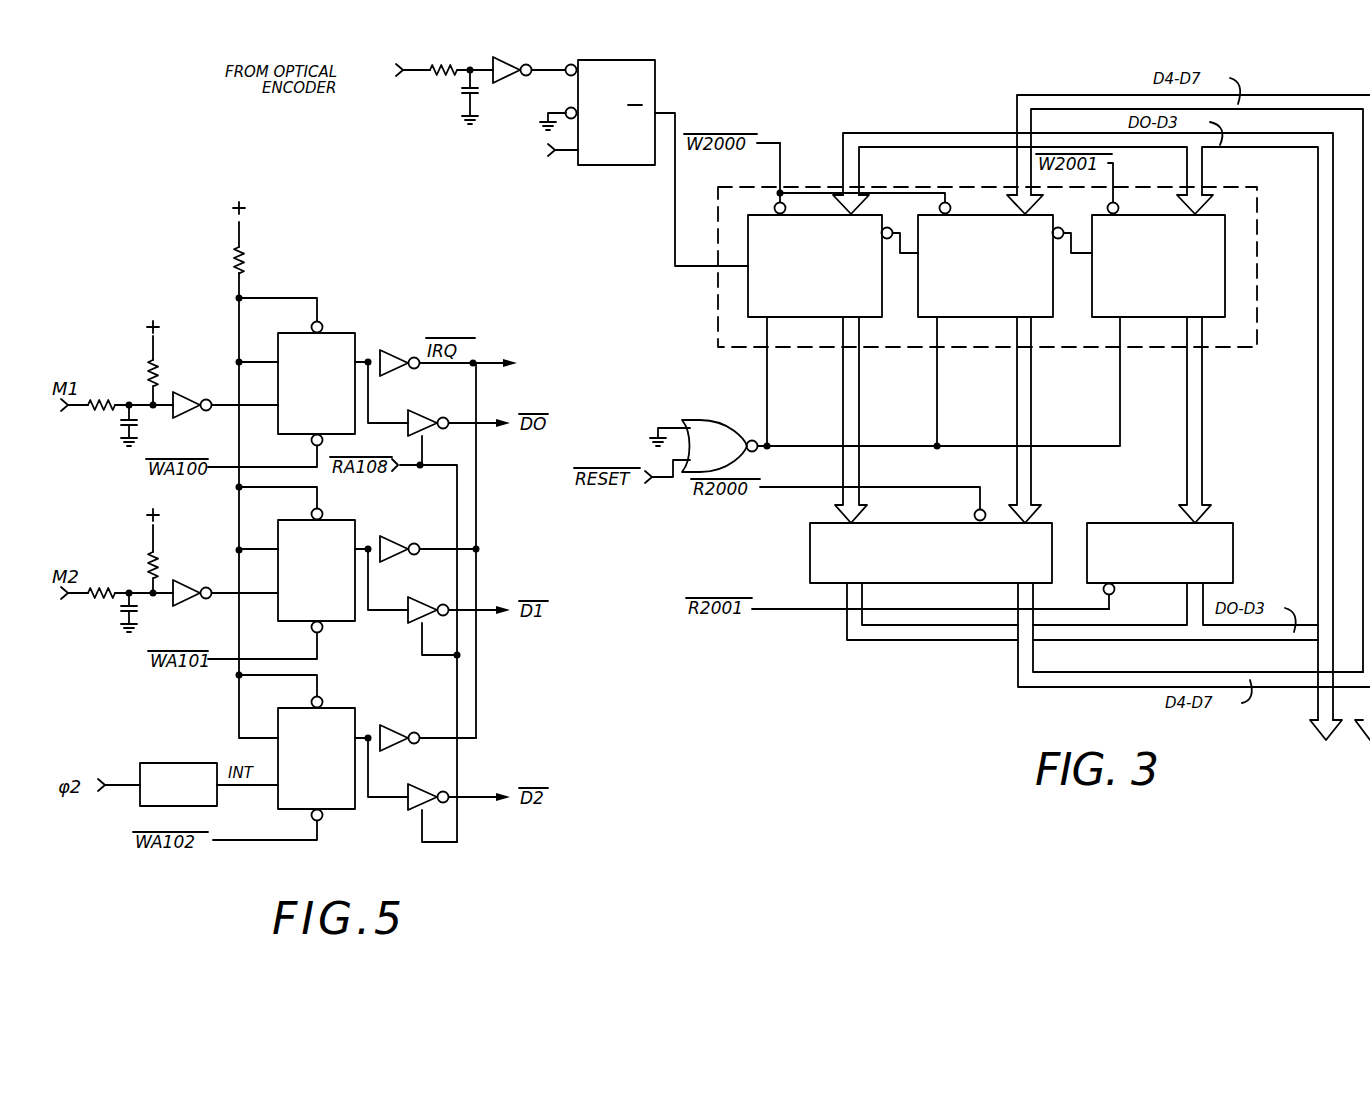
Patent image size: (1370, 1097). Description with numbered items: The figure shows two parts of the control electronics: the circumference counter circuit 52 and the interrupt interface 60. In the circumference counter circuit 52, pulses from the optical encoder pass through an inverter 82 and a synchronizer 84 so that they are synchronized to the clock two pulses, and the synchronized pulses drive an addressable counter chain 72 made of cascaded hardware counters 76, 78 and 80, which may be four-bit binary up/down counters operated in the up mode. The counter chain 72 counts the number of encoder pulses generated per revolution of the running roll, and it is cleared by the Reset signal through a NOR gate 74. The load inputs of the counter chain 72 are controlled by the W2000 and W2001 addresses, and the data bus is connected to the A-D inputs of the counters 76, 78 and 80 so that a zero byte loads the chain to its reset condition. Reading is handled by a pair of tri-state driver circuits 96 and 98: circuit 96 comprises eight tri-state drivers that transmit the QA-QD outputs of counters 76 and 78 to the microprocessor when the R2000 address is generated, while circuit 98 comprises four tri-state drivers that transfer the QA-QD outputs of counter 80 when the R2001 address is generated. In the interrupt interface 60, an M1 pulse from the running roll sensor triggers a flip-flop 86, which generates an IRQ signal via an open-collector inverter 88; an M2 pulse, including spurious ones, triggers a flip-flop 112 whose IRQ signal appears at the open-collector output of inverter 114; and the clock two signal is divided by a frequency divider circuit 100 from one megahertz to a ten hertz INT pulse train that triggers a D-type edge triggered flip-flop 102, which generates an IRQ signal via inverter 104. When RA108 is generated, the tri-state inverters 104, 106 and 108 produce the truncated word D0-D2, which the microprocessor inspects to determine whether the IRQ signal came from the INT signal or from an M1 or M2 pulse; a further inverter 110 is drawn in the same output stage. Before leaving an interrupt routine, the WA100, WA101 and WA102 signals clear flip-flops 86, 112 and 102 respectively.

In FIG. 3, the circumference counter circuit 52 is at (648, 251).
In FIG. 5, the interrupt interface 60 is at (180, 292).
In FIG. 3, the addressable counter chain 72 is at (730, 311).
In FIG. 3, the NOR gate 74 is at (705, 430).
In FIG. 3, the hardware counter 76 is at (870, 287).
In FIG. 3, the hardware counter 78 is at (1042, 287).
In FIG. 3, the hardware counter 80 is at (1215, 287).
In FIG. 3, the inverter 82 is at (514, 79).
In FIG. 3, the synchronizer 84 is at (652, 68).
In FIG. 5, the flip-flop 86 is at (341, 343).
In FIG. 5, the inverter 88 is at (410, 333).
In FIG. 3, the tri-state driver circuit 96 is at (815, 547).
In FIG. 3, the tri-state driver circuit 98 is at (1220, 541).
In FIG. 5, the frequency divider circuit 100 is at (152, 770).
In FIG. 5, the flip-flop 102 is at (341, 718).
In FIG. 5, the inverter 104 is at (390, 730).
In FIG. 5, the tri-state inverter 106 is at (440, 393).
In FIG. 5, the tri-state inverter 108 is at (428, 583).
In FIG. 5, the inverter 110 is at (428, 770).
In FIG. 5, the flip-flop 112 is at (341, 530).
In FIG. 5, the inverter 114 is at (390, 556).